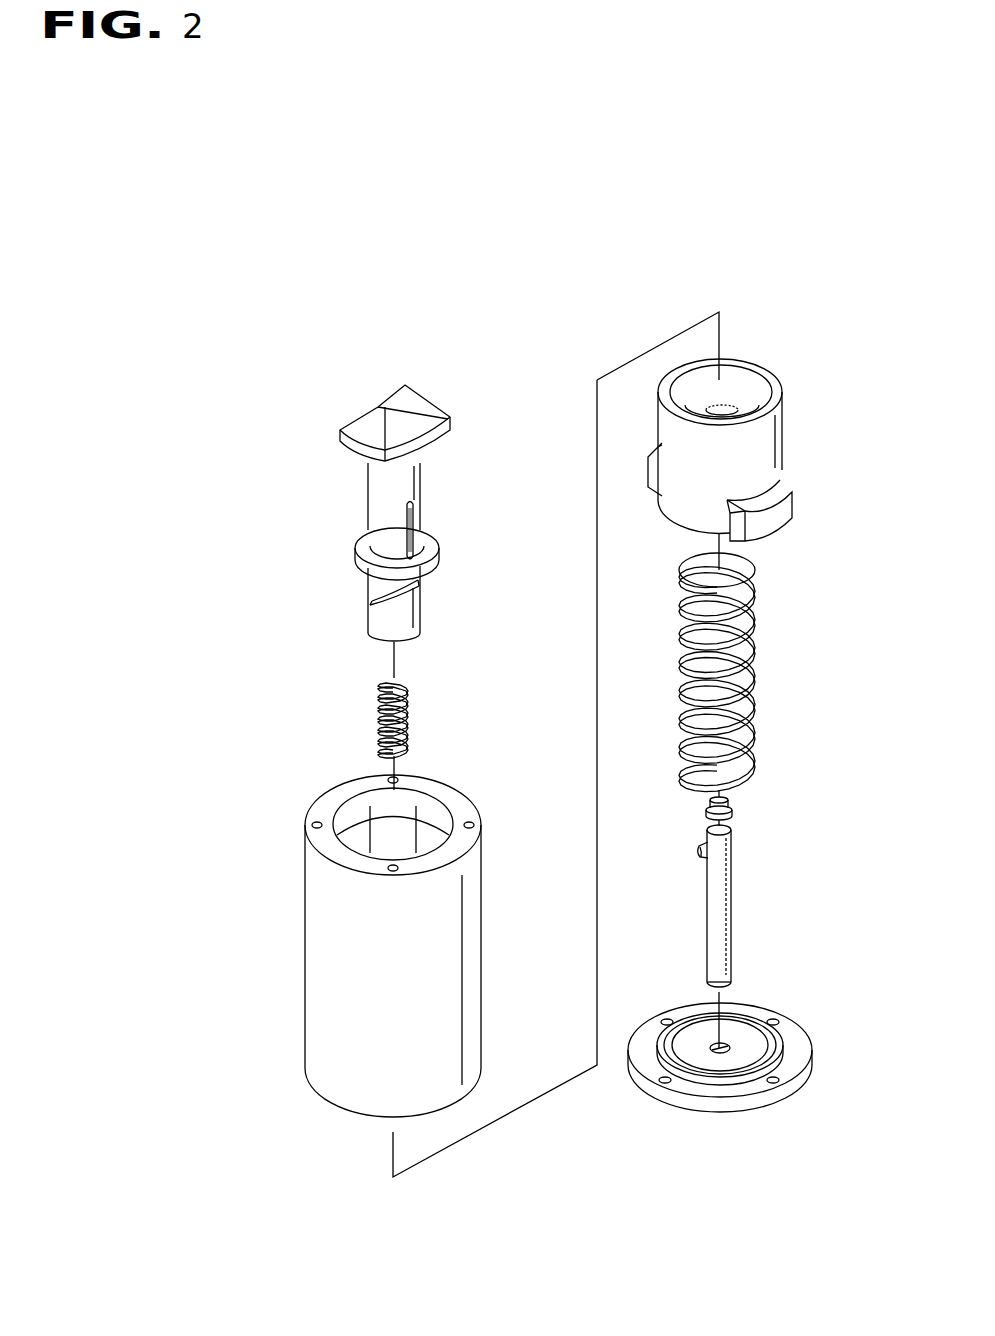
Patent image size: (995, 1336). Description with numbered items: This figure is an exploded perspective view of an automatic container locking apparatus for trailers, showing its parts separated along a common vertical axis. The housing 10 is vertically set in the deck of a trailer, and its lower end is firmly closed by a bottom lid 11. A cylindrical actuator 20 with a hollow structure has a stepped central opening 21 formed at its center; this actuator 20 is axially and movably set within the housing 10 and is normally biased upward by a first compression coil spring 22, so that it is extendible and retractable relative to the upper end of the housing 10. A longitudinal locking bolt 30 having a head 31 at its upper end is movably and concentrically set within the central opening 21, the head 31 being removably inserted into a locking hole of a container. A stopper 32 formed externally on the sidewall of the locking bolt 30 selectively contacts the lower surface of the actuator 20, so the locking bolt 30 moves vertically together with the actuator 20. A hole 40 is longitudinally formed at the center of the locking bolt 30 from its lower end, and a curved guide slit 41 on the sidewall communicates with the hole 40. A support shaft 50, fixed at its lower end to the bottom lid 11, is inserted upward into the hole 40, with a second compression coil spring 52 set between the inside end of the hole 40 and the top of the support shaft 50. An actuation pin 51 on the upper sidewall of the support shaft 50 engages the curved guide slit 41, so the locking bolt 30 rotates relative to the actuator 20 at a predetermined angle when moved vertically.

The housing 10 is at (305, 935).
The bottom lid 11 is at (712, 1112).
The cylindrical actuator 20 is at (781, 474).
The stepped central opening 21 is at (725, 410).
The first compression coil spring 22 is at (757, 668).
The locking bolt 30 is at (377, 497).
The head 31 is at (344, 439).
The stopper 32 is at (360, 570).
The hole 40 is at (377, 643).
The guide slit 41 is at (368, 603).
The support shaft 50 is at (733, 900).
The actuation pin 51 is at (700, 848).
The second compression coil spring 52 is at (409, 702).